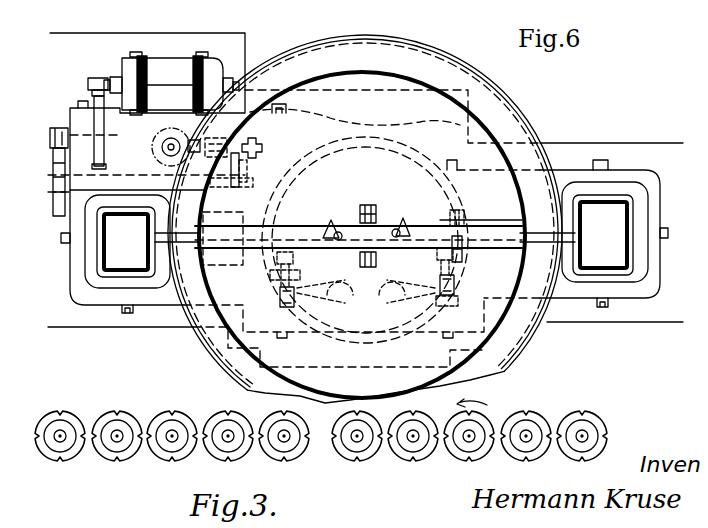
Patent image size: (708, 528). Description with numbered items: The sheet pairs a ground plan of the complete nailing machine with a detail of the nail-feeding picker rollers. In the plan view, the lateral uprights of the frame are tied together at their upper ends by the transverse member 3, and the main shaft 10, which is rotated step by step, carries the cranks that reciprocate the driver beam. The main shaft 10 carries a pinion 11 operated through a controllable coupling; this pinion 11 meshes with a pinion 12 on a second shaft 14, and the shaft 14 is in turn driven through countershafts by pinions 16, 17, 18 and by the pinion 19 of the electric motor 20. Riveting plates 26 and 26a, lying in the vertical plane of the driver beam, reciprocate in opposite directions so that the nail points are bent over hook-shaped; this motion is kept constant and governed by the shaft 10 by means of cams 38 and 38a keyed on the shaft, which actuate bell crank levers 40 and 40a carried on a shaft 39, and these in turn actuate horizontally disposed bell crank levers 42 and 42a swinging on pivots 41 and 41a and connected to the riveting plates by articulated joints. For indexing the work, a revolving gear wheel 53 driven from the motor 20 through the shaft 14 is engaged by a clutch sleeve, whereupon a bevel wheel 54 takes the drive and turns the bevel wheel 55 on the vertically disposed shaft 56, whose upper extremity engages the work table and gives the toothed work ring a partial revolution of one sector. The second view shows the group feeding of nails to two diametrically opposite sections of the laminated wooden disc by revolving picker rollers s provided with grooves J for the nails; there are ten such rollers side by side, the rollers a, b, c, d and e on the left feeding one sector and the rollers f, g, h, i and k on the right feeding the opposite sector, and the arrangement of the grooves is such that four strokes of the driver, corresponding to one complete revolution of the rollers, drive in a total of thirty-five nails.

In FIG. 6, the transverse member 3 is at (662, 237).
In FIG. 6, the main shaft 10 is at (385, 226).
In FIG. 6, the pinion 11 is at (220, 275).
In FIG. 6, the pinion 12 is at (247, 170).
In FIG. 6, the second shaft 14 is at (198, 216).
In FIG. 6, the pinion 16 is at (58, 164).
In FIG. 6, the pinion 17 is at (56, 128).
In FIG. 6, the pinion 18 is at (100, 123).
In FIG. 6, the motor pinion 19 is at (97, 78).
In FIG. 6, the electric motor 20 is at (210, 70).
In FIG. 6, the riveting plate 26 is at (331, 221).
In FIG. 6, the riveting plate 26a is at (404, 220).
In FIG. 6, the cam 38 is at (278, 256).
In FIG. 6, the cam 38a is at (452, 254).
In FIG. 6, the shaft 39 is at (458, 300).
In FIG. 6, the bell crank lever 40 is at (280, 290).
In FIG. 6, the bell crank lever 40a is at (455, 288).
In FIG. 6, the pivot 41 is at (345, 295).
In FIG. 6, the pivot 41a is at (390, 295).
In FIG. 6, the horizontally disposed bell crank lever 42 is at (332, 270).
In FIG. 6, the horizontally disposed bell crank lever 42a is at (400, 268).
In FIG. 6, the revolving gear wheel 53 is at (241, 126).
In FIG. 6, the bevel wheel 54 is at (208, 140).
In FIG. 6, the bevel wheel 55 is at (156, 143).
In FIG. 6, the vertically disposed shaft 56 is at (163, 150).
In FIG. 3, the revolving picker roller a is at (65, 427).
In FIG. 3, the revolving picker roller b is at (122, 425).
In FIG. 3, the revolving picker roller c is at (165, 428).
In FIG. 3, the revolving picker roller d is at (215, 413).
In FIG. 3, the revolving picker roller e is at (293, 425).
In FIG. 3, the revolving picker roller f is at (348, 437).
In FIG. 3, the revolving picker roller g is at (417, 447).
In FIG. 3, the revolving picker roller h is at (470, 447).
In FIG. 3, the revolving picker roller i is at (527, 442).
In FIG. 3, the revolving picker roller k is at (587, 432).
In FIG. 3, the revolving picker rollers s is at (115, 447).
In FIG. 3, the grooves J is at (531, 406).